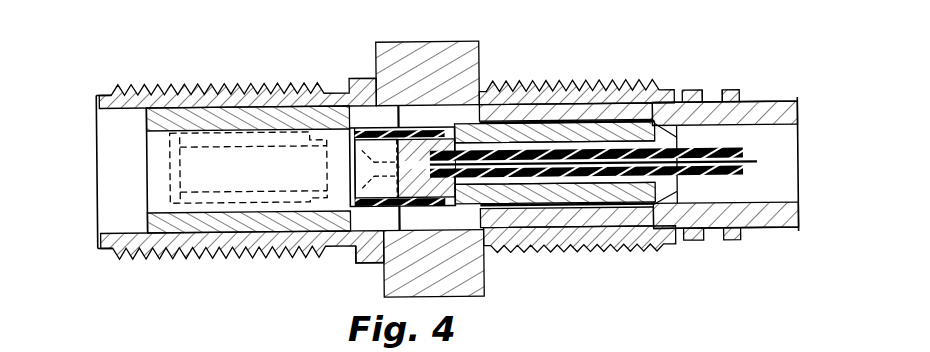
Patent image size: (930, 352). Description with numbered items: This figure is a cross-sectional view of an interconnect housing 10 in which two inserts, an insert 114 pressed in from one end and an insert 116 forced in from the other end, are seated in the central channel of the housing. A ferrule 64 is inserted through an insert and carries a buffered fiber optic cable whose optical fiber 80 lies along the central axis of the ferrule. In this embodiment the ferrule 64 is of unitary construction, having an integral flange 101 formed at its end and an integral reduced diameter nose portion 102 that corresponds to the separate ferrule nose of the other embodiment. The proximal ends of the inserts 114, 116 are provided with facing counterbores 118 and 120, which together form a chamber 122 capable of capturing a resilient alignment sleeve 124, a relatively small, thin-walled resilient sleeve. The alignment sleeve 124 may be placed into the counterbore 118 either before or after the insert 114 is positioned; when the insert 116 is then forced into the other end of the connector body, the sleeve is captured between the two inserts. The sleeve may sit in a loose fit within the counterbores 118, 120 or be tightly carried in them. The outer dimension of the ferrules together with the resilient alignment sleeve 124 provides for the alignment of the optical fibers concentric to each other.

The housing 10 is at (485, 49).
The ferrule 64 is at (604, 122).
The optical fiber 80 is at (757, 165).
The integral flange 101 is at (684, 96).
The reduced diameter nose portion 102 is at (466, 212).
The insert 114 is at (232, 118).
The insert 116 is at (562, 112).
The counterbore 118 is at (343, 133).
The counterbore 120 is at (462, 127).
The chamber 122 is at (386, 181).
The resilient alignment sleeve 124 is at (356, 247).